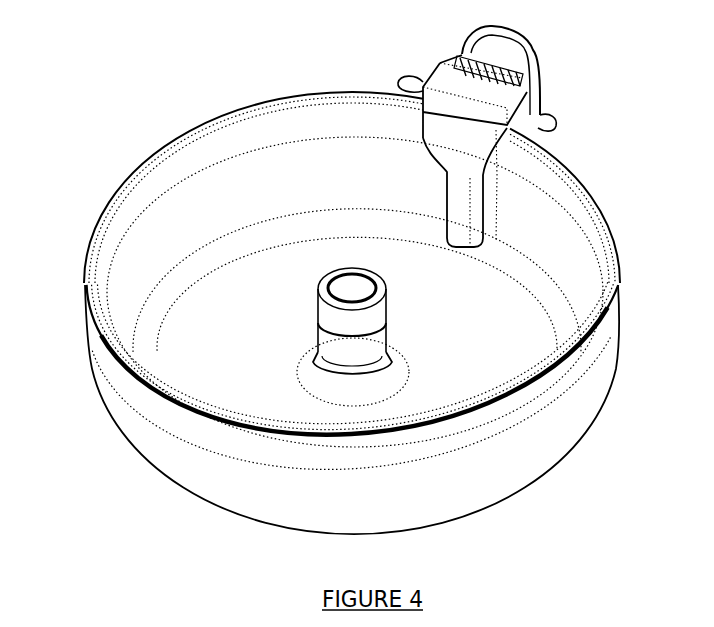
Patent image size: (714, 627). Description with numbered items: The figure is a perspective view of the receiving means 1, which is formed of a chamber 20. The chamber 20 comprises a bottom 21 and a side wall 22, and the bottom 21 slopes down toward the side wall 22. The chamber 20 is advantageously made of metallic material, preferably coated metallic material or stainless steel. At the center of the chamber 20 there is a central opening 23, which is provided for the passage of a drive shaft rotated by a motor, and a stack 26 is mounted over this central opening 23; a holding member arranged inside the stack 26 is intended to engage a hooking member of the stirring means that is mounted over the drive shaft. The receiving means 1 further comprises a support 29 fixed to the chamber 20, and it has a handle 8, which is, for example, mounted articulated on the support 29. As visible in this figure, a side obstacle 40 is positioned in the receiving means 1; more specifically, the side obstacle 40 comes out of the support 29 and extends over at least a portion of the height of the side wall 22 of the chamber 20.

The receiving means 1 is at (133, 494).
The handle 8 is at (487, 43).
The chamber 20 is at (628, 377).
The bottom 21 is at (533, 327).
The side wall 22 is at (96, 324).
The central opening 23 is at (352, 284).
The stack 26 is at (378, 308).
The support 29 is at (513, 63).
The side obstacle 40 is at (462, 210).